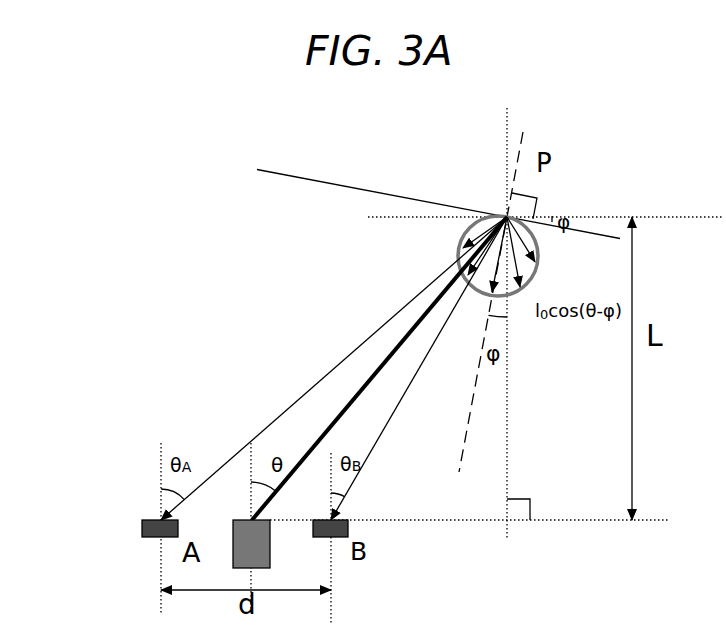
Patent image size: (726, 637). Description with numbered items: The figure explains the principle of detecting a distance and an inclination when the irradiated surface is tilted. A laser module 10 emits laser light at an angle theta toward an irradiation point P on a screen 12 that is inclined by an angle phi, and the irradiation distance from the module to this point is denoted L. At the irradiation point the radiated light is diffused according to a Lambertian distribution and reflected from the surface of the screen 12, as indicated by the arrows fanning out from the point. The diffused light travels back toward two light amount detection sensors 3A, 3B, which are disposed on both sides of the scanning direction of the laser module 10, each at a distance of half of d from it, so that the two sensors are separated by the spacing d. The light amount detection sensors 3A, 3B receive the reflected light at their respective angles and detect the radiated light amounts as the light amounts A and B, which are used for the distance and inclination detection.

The screen 12 is at (309, 177).
The laser module 10 is at (271, 542).
The light amount detection sensor 3A is at (148, 538).
The light amount detection sensor 3B is at (349, 528).